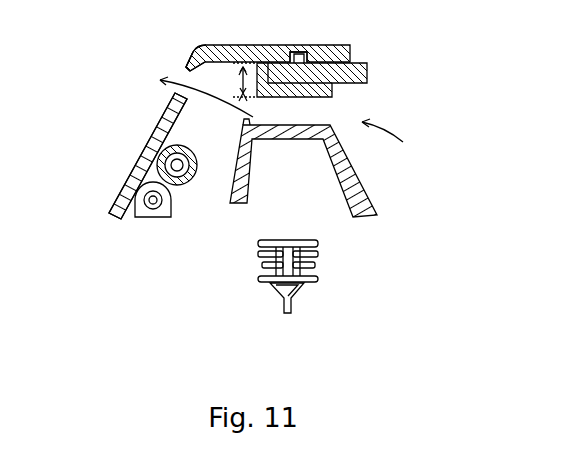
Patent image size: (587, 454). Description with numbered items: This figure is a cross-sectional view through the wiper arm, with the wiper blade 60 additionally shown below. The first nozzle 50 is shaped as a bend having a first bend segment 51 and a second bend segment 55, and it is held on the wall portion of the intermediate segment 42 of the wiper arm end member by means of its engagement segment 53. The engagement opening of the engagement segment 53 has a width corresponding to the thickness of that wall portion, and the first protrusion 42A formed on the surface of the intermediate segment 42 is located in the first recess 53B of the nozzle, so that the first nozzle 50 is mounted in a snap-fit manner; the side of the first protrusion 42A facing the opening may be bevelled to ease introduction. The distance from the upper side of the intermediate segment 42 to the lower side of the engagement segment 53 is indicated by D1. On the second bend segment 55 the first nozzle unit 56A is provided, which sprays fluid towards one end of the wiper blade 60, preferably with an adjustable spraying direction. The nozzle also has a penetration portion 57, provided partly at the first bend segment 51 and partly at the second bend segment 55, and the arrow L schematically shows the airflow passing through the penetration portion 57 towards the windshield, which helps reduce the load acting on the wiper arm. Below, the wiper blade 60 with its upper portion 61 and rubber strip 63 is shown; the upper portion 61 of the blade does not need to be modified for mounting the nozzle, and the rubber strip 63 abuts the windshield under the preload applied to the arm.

The intermediate segment 42 is at (368, 68).
The first protrusion 42A is at (295, 62).
The first nozzle 50 is at (135, 127).
The first bend segment 51 is at (222, 48).
The engagement segment 53 is at (350, 52).
The first recess 53B is at (291, 60).
The second bend segment 55 is at (130, 182).
The first nozzle unit 56A is at (155, 210).
The penetration portion 57 is at (190, 73).
The wiper blade 60 is at (366, 270).
The upper portion 61 is at (232, 205).
The rubber strip 63 is at (296, 282).
The arrow L is at (190, 90).
The distance D1 is at (234, 80).